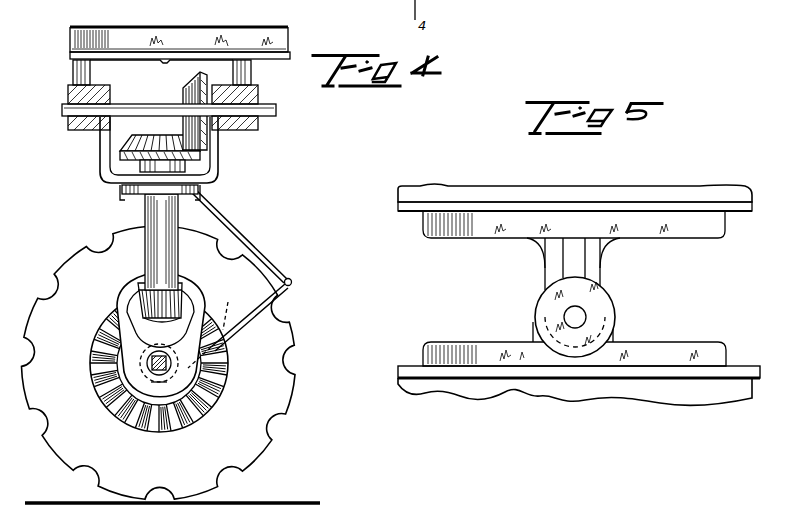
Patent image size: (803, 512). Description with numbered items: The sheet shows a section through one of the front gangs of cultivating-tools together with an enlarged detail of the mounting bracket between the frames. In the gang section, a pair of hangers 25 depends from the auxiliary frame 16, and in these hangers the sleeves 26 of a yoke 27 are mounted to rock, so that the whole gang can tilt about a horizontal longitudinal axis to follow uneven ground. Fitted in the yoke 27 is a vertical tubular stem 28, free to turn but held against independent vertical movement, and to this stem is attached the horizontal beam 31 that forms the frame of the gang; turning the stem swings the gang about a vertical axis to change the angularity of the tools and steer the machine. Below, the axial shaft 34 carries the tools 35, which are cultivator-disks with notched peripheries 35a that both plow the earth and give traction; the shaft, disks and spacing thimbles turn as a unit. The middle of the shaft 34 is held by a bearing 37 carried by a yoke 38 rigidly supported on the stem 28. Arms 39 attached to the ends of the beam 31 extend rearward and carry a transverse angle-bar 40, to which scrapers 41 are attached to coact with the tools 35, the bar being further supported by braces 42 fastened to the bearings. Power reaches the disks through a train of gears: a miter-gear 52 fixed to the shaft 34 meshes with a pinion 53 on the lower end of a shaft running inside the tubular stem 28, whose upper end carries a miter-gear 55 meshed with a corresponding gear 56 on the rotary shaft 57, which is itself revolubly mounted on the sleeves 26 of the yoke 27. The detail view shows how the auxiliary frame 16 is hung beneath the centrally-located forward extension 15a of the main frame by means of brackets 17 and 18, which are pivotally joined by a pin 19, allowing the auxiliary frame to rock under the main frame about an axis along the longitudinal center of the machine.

In FIG. 4, the auxiliary frame 16 is at (197, 34).
In FIG. 5, the auxiliary frame 16 is at (579, 386).
In FIG. 4, the hangers 25 is at (91, 75).
In FIG. 4, the sleeves 26 is at (68, 122).
In FIG. 4, the yokes 27 is at (219, 162).
In FIG. 4, the vertical tubular stems 28 is at (166, 256).
In FIG. 4, the horizontal beams 31 is at (121, 192).
In FIG. 4, the axial shafts 34 is at (165, 376).
In FIG. 4, the tools 35 is at (159, 363).
In FIG. 4, the notched peripheries 35a is at (300, 358).
In FIG. 4, the bearing 37 is at (147, 370).
In FIG. 4, the yoke 38 is at (198, 286).
In FIG. 4, the arms 39 is at (239, 234).
In FIG. 4, the transverse angle-bar 40 is at (291, 280).
In FIG. 4, the scrapers 41 is at (221, 308).
In FIG. 4, the braces 42 is at (243, 317).
In FIG. 4, the miter-gear 52 is at (90, 352).
In FIG. 4, the pinion 53 is at (155, 300).
In FIG. 4, the miter-gears 55 is at (128, 145).
In FIG. 4, the gears 56 is at (195, 87).
In FIG. 4, the rotary shafts 57 is at (132, 103).
In FIG. 5, the forward extension 15a is at (575, 211).
In FIG. 5, the bracket 17 is at (602, 264).
In FIG. 5, the bracket 18 is at (605, 353).
In FIG. 5, the pin 19 is at (584, 314).